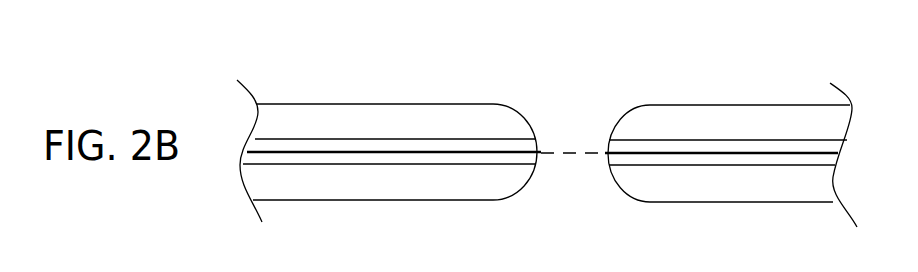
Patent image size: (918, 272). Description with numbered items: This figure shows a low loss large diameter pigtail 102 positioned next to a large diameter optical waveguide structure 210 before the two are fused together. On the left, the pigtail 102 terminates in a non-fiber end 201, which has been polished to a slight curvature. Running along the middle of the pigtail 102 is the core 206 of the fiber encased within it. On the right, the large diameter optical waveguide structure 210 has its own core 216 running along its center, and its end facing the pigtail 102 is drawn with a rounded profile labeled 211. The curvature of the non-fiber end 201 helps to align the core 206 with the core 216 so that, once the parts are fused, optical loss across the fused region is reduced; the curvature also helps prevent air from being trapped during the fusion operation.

The pigtail 102 is at (466, 93).
The non-fiber end 201 is at (521, 117).
The core 206 is at (400, 157).
The large diameter optical waveguide structure 210 is at (742, 99).
The rounded proximal end 211 is at (622, 185).
The core 216 is at (775, 155).